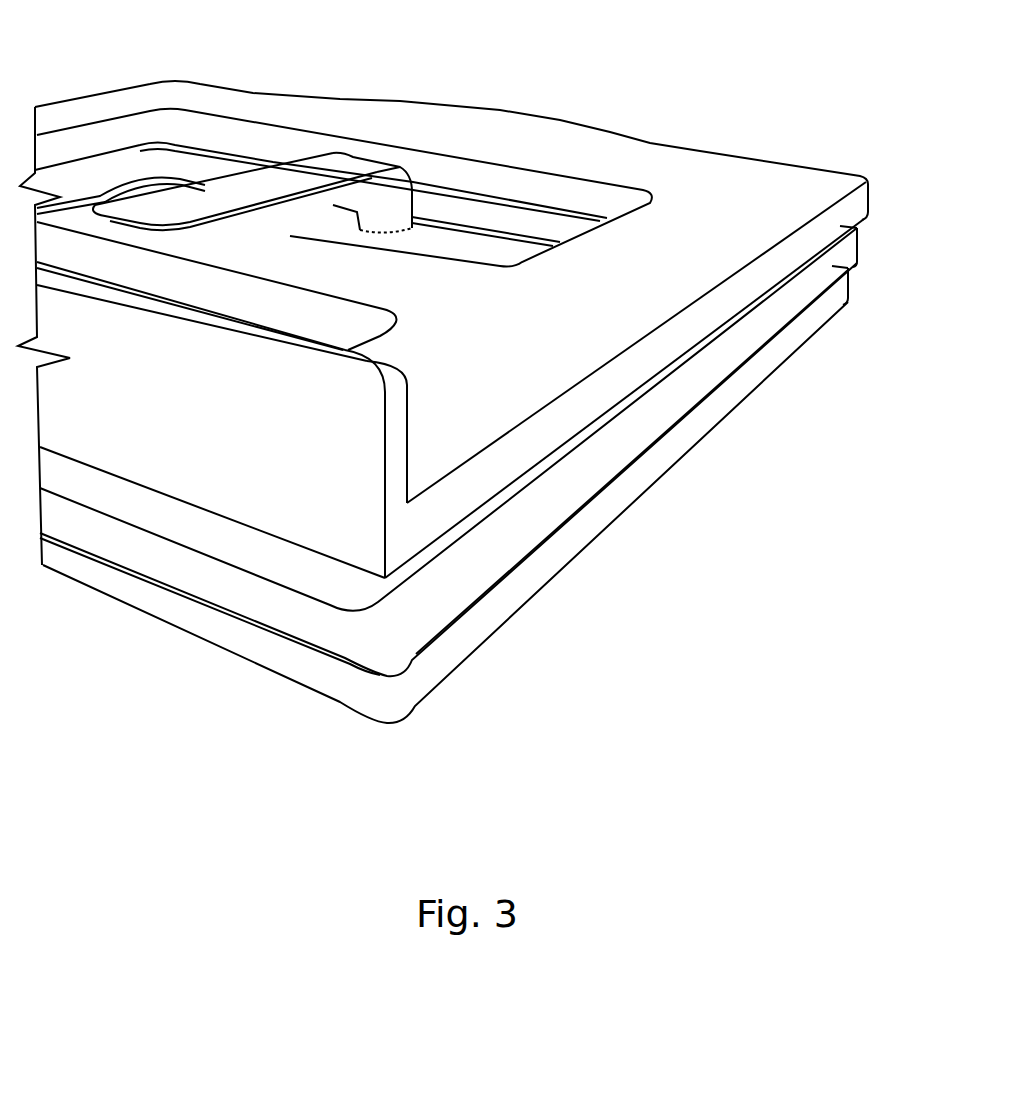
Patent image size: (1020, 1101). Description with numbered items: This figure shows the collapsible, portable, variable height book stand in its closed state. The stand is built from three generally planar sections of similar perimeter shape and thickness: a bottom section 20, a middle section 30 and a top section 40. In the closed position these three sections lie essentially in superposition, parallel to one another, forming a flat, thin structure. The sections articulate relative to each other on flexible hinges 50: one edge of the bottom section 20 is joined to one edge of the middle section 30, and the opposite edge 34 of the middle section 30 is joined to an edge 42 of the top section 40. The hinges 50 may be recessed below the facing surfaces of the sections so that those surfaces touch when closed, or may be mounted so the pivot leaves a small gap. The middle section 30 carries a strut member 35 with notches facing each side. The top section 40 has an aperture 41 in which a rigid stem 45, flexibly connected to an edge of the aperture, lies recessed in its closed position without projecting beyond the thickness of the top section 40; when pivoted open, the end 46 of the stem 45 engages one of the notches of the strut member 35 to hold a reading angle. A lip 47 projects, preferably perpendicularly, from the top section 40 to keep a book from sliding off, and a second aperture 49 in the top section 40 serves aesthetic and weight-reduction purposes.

The bottom section 20 is at (807, 327).
The middle section 30 is at (833, 262).
The opposite edge of the middle section 34 is at (345, 633).
The strut member 35 is at (363, 220).
The top section 40 is at (868, 198).
The aperture 41 is at (482, 210).
The edge of the top section 42 is at (360, 522).
The rigid stem 45 is at (277, 178).
The end of the stem 46 is at (368, 196).
The lip 47 is at (393, 445).
The second aperture 49 is at (320, 335).
The flexible hinge 50 is at (137, 540).